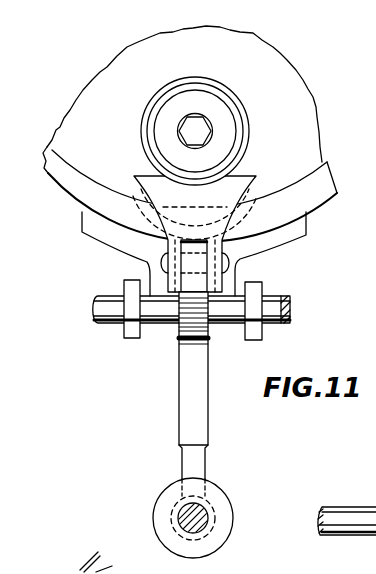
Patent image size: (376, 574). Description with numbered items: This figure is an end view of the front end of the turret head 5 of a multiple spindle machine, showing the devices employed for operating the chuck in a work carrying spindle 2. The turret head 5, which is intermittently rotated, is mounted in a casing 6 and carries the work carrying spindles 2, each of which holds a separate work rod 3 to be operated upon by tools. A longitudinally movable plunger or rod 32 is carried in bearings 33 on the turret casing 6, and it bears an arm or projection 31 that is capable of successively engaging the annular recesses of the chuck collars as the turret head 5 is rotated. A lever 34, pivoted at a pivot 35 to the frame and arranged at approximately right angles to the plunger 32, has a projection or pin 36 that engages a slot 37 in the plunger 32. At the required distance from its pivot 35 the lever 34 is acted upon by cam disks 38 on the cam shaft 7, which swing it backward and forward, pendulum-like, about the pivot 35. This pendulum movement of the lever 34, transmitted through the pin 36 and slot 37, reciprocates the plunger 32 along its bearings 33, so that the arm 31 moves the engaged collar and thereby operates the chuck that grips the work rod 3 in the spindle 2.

The work carrying spindle 2 is at (217, 88).
The work rod 3 is at (195, 131).
The turret head 5 is at (182, 99).
The casing 6 is at (320, 188).
The cam shaft 7 is at (201, 508).
The arm or projection 31 is at (240, 178).
The plunger or rod 32 is at (222, 283).
The bearings 33 is at (134, 243).
The lever 34 is at (209, 397).
The pivot 35 is at (291, 302).
The projection or pin 36 is at (229, 262).
The slot 37 is at (180, 300).
The cam disks 38 is at (158, 513).